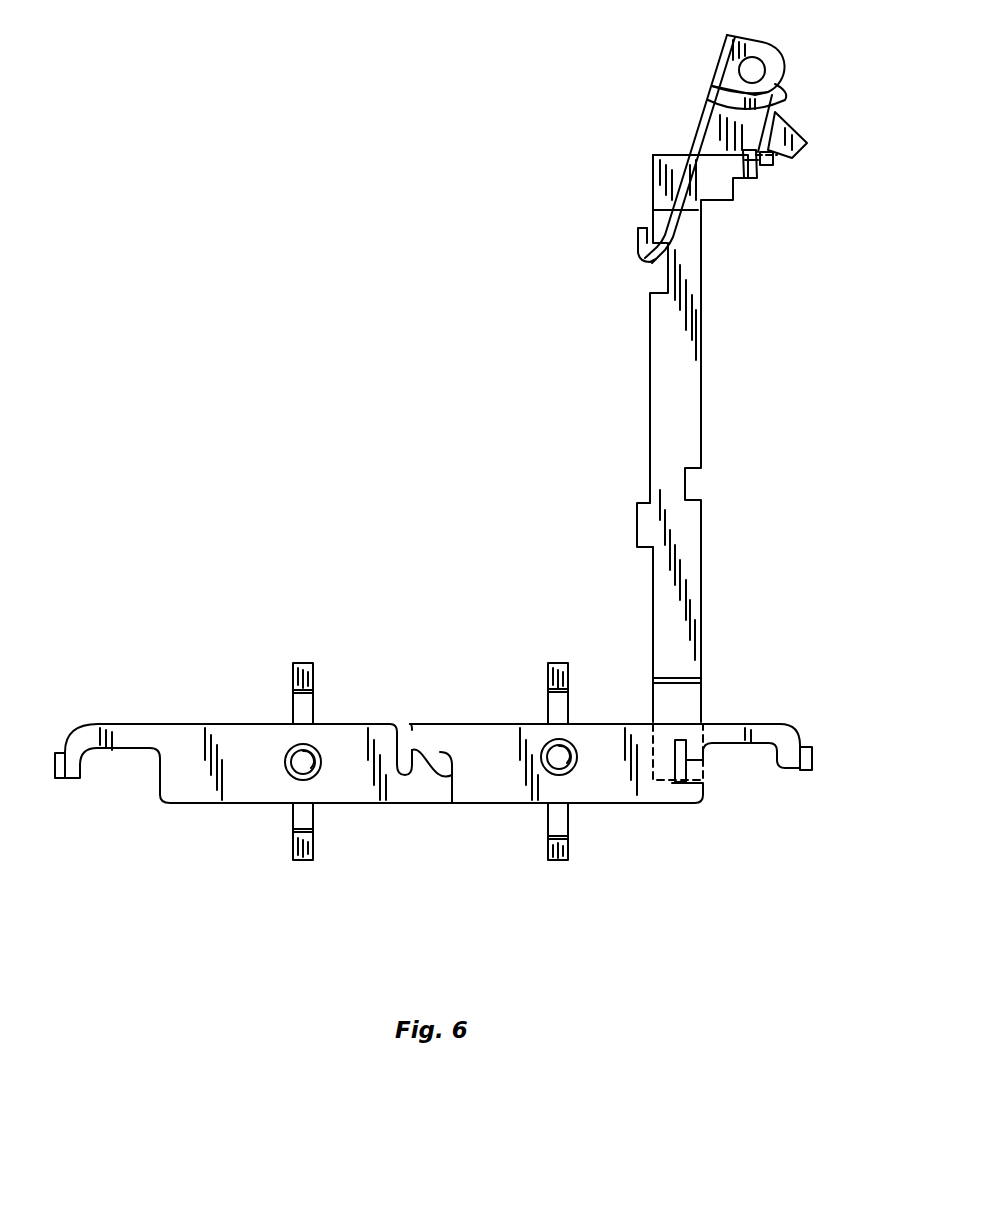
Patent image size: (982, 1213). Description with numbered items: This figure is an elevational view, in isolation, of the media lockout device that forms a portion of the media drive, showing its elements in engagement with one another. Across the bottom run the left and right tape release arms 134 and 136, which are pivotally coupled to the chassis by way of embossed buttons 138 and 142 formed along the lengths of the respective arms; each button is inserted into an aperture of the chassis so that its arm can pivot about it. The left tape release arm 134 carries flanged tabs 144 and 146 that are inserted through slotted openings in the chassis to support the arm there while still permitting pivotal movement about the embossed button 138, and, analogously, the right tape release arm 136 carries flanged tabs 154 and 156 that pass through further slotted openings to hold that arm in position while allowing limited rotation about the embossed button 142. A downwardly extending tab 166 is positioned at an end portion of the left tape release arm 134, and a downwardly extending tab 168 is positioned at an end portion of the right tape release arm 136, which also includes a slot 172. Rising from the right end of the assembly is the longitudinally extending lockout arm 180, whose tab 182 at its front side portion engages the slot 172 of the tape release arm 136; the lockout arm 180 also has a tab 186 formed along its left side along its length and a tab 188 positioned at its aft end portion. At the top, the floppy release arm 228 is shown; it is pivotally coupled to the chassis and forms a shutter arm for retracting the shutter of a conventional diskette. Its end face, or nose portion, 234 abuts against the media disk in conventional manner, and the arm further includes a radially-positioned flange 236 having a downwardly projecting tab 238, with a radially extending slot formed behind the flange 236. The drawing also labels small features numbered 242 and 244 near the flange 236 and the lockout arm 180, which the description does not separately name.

The left tape release arm 134 is at (205, 787).
The right tape release arm 136 is at (612, 782).
The embossed button 138 is at (303, 762).
The embossed button 142 is at (559, 755).
The flanged tab 144 is at (303, 857).
The flanged tab 146 is at (303, 672).
The flanged tab 154 is at (553, 860).
The flanged tab 156 is at (558, 672).
The downwardly extending tab 166 is at (50, 778).
The downwardly extending tab 168 is at (813, 770).
The slot 172 is at (672, 770).
The lockout arm 180 is at (660, 422).
The tab 182 is at (687, 765).
The tab 186 is at (638, 528).
The tab 188 is at (752, 163).
The floppy release arm 228 is at (707, 100).
The nose portion 234 is at (647, 257).
The radially-positioned flange 236 is at (788, 132).
The downwardly projecting tab 238 is at (780, 118).
The tab 242 is at (755, 173).
The small tab 244 is at (777, 157).